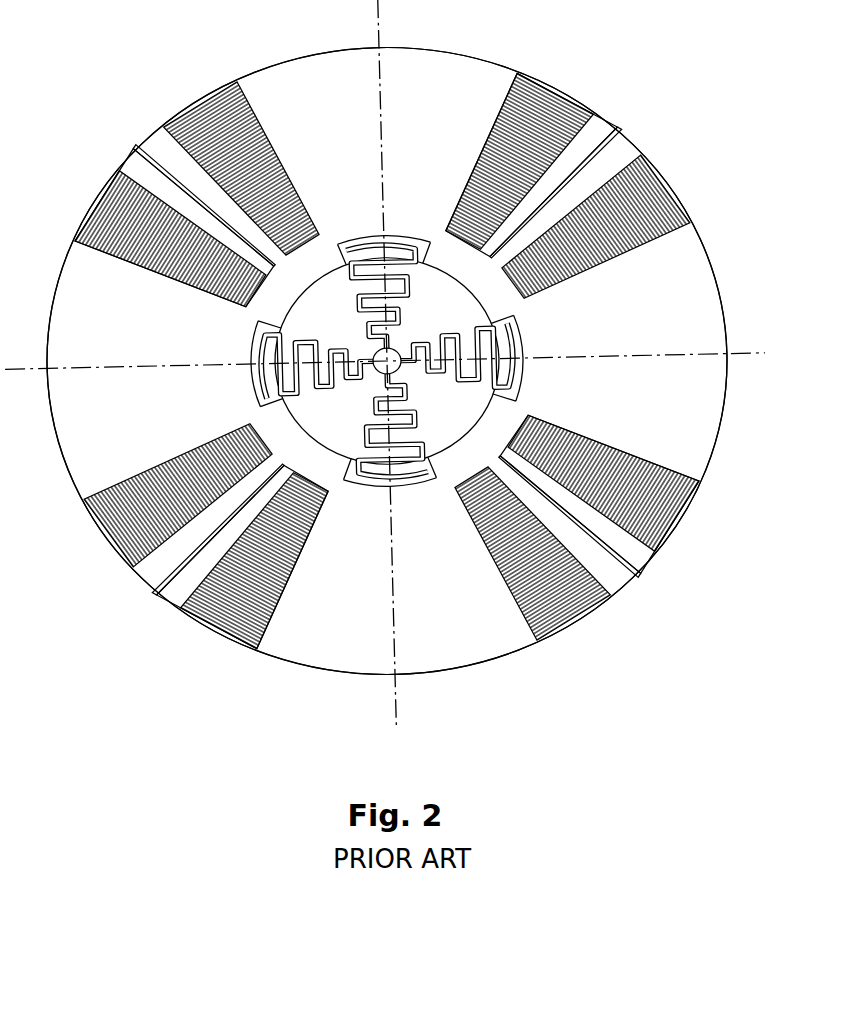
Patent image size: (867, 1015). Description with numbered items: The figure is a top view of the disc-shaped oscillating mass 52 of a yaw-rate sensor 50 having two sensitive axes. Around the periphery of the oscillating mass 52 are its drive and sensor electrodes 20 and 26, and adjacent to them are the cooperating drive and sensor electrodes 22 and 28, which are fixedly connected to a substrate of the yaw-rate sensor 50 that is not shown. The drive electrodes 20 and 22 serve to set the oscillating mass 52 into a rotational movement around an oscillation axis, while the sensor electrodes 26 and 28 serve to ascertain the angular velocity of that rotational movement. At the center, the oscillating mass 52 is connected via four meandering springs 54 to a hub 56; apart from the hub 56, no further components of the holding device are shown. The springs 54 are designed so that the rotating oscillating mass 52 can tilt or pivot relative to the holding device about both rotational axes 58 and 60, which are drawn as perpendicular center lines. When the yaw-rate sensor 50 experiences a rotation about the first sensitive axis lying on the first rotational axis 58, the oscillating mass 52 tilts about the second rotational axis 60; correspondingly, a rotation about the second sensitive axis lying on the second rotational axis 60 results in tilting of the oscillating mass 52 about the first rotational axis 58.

The drive electrode 20 is at (522, 72).
The drive electrode 22 is at (580, 105).
The sensor electrode 26 is at (232, 82).
The sensor electrode 28 is at (170, 106).
The yaw-rate sensor 50 is at (694, 619).
The oscillating mass 52 is at (695, 288).
The meandering spring 54 is at (480, 387).
The hub 56 is at (380, 372).
The first rotational axis 58 is at (765, 356).
The second rotational axis 60 is at (397, 703).